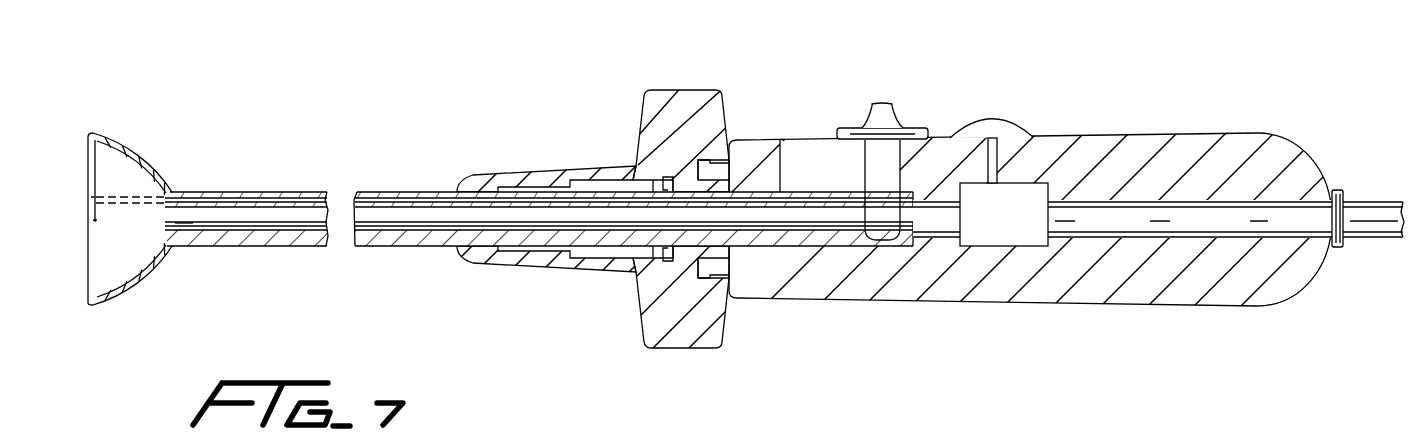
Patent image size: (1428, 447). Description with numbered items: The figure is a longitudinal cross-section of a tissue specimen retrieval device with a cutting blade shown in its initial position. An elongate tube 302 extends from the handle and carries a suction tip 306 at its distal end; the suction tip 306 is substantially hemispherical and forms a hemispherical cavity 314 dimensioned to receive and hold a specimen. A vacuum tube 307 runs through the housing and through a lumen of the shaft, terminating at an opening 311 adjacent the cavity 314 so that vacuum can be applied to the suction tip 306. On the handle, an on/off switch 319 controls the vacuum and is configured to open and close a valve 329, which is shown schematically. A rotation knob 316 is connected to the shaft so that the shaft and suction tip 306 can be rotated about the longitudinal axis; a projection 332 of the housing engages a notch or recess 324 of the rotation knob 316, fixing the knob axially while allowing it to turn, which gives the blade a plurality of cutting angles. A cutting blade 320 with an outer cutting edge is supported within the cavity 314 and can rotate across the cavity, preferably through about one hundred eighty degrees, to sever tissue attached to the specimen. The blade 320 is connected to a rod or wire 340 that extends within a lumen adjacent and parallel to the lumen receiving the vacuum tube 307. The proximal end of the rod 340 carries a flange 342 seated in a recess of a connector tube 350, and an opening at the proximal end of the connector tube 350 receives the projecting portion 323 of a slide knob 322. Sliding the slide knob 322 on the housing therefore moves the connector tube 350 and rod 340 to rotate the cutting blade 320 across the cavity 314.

The elongate tube 302 is at (254, 192).
The suction tip 306 is at (175, 212).
The vacuum tube 307 is at (1293, 210).
The opening 311 is at (163, 222).
The cavity 314 is at (118, 270).
The rotation knob 316 is at (682, 110).
The on/off switch 319 is at (992, 122).
The cutting blade 320 is at (96, 168).
The slide knob 322 is at (882, 105).
The projecting portion 323 is at (875, 177).
The notch or recess 324 is at (730, 162).
The valve 329 is at (1025, 203).
The projection 332 is at (712, 258).
The rod or wire 340 is at (402, 200).
The flange 342 is at (663, 180).
The connector tube 350 is at (823, 230).